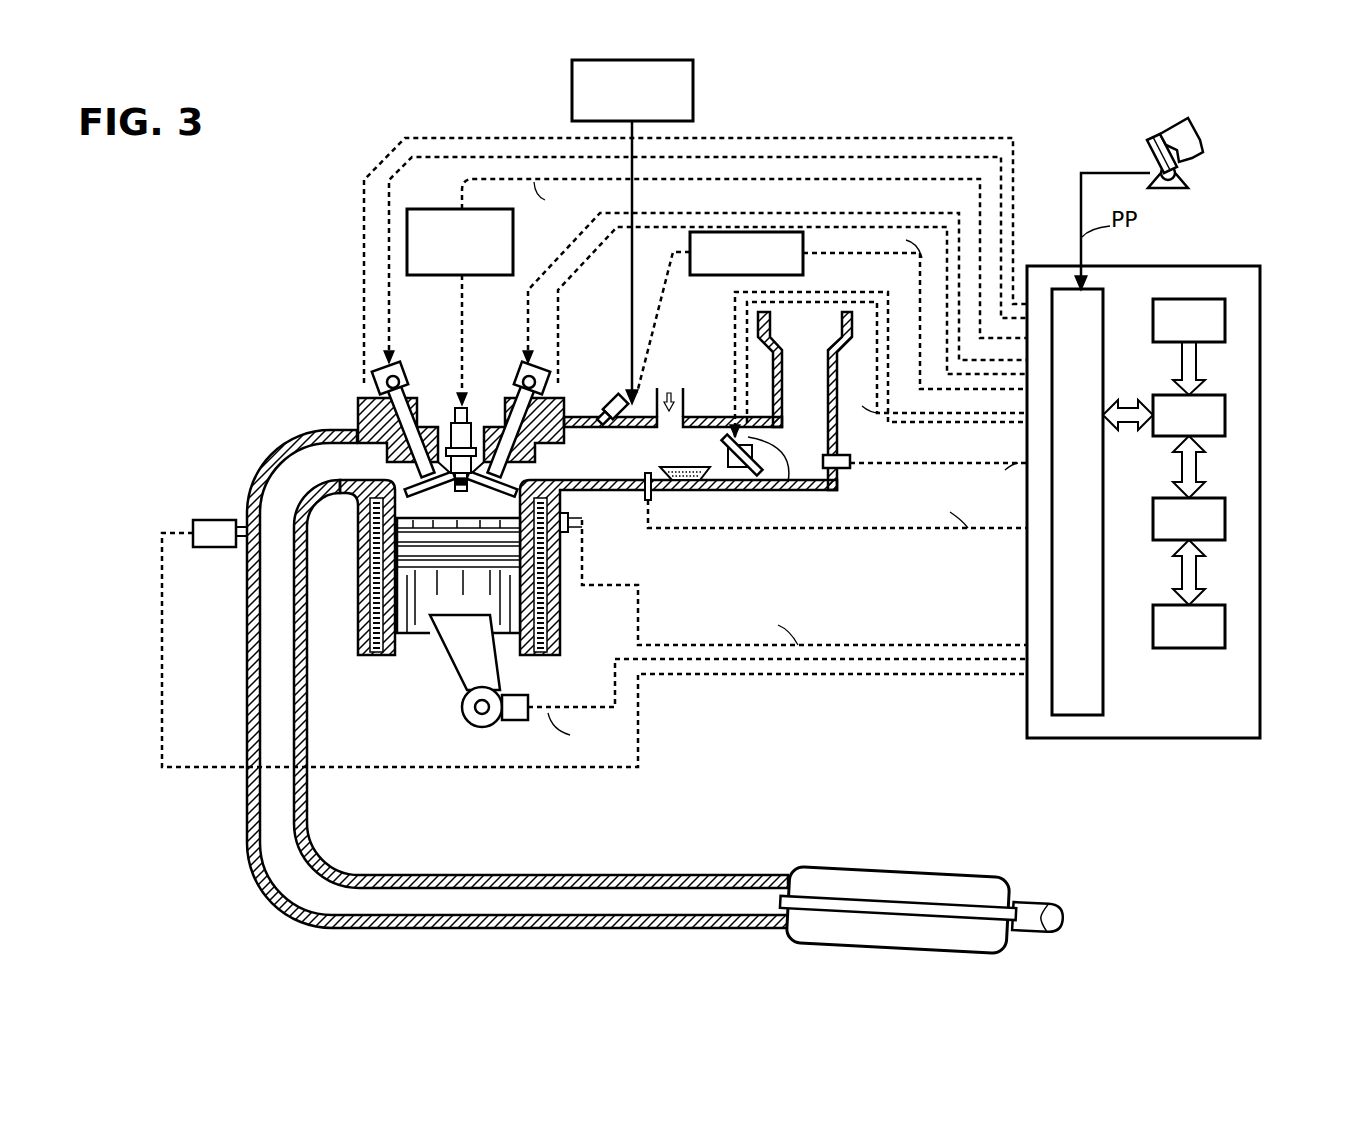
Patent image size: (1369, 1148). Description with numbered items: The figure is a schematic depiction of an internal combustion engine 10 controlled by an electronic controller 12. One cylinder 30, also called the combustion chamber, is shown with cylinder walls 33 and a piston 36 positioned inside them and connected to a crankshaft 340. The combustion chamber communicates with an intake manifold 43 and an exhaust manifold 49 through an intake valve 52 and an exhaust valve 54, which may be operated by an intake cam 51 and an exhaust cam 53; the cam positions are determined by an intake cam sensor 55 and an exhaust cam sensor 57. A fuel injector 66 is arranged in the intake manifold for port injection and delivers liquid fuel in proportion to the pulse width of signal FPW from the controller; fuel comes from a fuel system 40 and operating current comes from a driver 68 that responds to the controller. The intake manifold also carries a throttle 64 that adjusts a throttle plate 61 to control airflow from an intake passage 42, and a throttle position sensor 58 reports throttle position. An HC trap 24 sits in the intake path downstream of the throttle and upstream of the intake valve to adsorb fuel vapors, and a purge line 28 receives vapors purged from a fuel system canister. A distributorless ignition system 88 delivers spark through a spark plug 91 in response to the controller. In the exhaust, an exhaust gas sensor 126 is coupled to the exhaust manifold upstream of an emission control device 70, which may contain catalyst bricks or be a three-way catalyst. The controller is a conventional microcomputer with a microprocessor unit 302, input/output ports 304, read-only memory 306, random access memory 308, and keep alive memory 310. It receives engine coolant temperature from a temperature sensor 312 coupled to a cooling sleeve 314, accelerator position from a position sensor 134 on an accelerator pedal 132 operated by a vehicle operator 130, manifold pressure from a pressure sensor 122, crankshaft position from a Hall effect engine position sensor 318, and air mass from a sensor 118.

The internal combustion engine 10 is at (287, 347).
The electronic controller 12 is at (1191, 485).
The HC trap 24 is at (678, 482).
The purge line 28 is at (681, 443).
The cylinder 30 is at (358, 612).
The cylinder walls 33 is at (408, 580).
The piston 36 is at (443, 605).
The fuel system 40 is at (686, 117).
The intake passage 42 is at (816, 373).
The intake manifold 43 is at (601, 466).
The exhaust manifold 49 is at (333, 474).
The intake cam 51 is at (520, 366).
The intake valve 52 is at (487, 470).
The exhaust cam 53 is at (392, 353).
The exhaust valve 54 is at (398, 470).
The intake cam sensor 55 is at (536, 380).
The exhaust cam sensor 57 is at (412, 455).
The throttle position sensor 58 is at (790, 482).
The throttle plate 61 is at (750, 475).
The throttle 64 is at (735, 470).
The fuel injector 66 is at (613, 395).
The driver 68 is at (800, 266).
The emission control device 70 is at (955, 870).
The distributorless ignition system 88 is at (424, 209).
The spark plug 91 is at (466, 406).
The air mass sensor 118 is at (850, 458).
The pressure sensor 122 is at (647, 500).
The exhaust gas sensor 126 is at (193, 522).
The vehicle operator 130 is at (1202, 195).
The accelerator pedal 132 is at (1148, 152).
The position sensor 134 is at (1186, 173).
The microprocessor unit 302 is at (1228, 418).
The input/output ports 304 is at (1107, 292).
The read-only memory 306 is at (1228, 320).
The random access memory 308 is at (1228, 518).
The keep alive memory 310 is at (1228, 626).
The temperature sensor 312 is at (568, 535).
The cooling sleeve 314 is at (556, 622).
The engine position sensor 318 is at (515, 722).
The crankshaft 340 is at (480, 728).